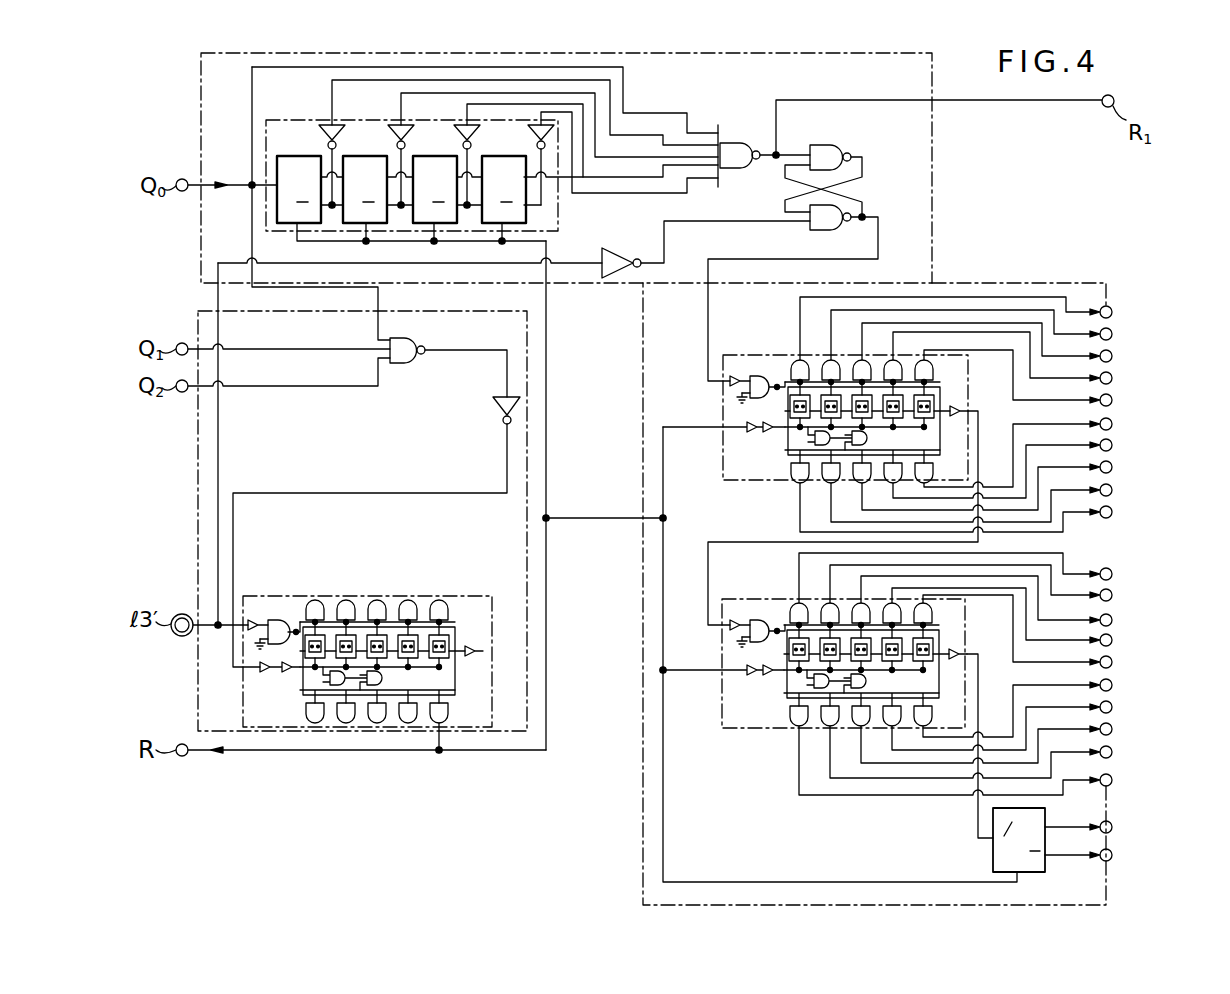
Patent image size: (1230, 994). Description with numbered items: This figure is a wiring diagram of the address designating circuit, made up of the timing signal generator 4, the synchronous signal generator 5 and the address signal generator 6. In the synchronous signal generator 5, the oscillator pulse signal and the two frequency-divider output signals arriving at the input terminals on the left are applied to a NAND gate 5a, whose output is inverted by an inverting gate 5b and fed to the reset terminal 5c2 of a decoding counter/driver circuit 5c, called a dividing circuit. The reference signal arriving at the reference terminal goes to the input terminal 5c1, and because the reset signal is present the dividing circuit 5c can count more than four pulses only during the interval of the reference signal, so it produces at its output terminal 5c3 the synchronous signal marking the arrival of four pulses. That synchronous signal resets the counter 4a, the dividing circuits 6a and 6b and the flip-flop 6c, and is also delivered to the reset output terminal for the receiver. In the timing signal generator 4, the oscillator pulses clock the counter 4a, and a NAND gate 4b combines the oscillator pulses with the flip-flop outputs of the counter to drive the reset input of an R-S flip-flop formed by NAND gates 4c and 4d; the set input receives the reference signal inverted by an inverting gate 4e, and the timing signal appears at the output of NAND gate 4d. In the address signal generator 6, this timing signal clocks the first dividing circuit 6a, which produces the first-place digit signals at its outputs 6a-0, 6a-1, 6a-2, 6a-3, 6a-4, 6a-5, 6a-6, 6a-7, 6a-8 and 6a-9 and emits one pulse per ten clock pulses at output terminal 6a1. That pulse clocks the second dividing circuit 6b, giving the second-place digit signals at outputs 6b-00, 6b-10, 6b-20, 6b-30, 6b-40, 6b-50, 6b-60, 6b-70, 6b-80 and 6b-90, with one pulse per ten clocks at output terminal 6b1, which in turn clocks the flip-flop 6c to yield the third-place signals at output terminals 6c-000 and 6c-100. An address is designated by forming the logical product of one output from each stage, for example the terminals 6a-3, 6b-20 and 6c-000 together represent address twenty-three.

The timing signal generator 4 is at (878, 53).
The counter 4a is at (322, 120).
The NAND gate 4b is at (744, 134).
The NAND gate 4c is at (826, 146).
The NAND gate 4d is at (826, 231).
The inverting gate 4e is at (620, 255).
The synchronous signal generator 5 is at (527, 652).
The NAND gate 5a is at (414, 364).
The inverting gate 5b is at (493, 408).
The decoding counter/driver circuit 5c is at (412, 596).
The input terminal 5c1 is at (272, 618).
The reset terminal 5c2 is at (262, 672).
The output terminal 5c3 is at (445, 718).
The address signal generator 6 is at (643, 723).
The first dividing circuit 6a is at (953, 372).
The output terminal 6a1 is at (992, 394).
The second dividing circuit 6b is at (980, 600).
The output terminal 6b1 is at (992, 642).
The flip-flop 6c is at (993, 866).
The output 6a-5 is at (1113, 312).
The output 6a-1 is at (1113, 334).
The output 6a-7 is at (1113, 356).
The output 6a-3 is at (1113, 378).
The output 6a-9 is at (1113, 400).
The output 6a-4 is at (1113, 424).
The output 6a-8 is at (1113, 445).
The output 6a-2 is at (1113, 467).
The output 6a-6 is at (1113, 490).
The output 6a-0 is at (1113, 512).
The output 6b-50 is at (1113, 574).
The output 6b-10 is at (1113, 595).
The output 6b-70 is at (1113, 620).
The output 6b-30 is at (1113, 640).
The output 6b-90 is at (1113, 662).
The output 6b-40 is at (1113, 685).
The output 6b-80 is at (1113, 707).
The output 6b-20 is at (1113, 729).
The output 6b-60 is at (1113, 752).
The output 6b-00 is at (1113, 780).
The output terminal 6c-000 is at (1113, 827).
The output terminal 6c-100 is at (1113, 855).